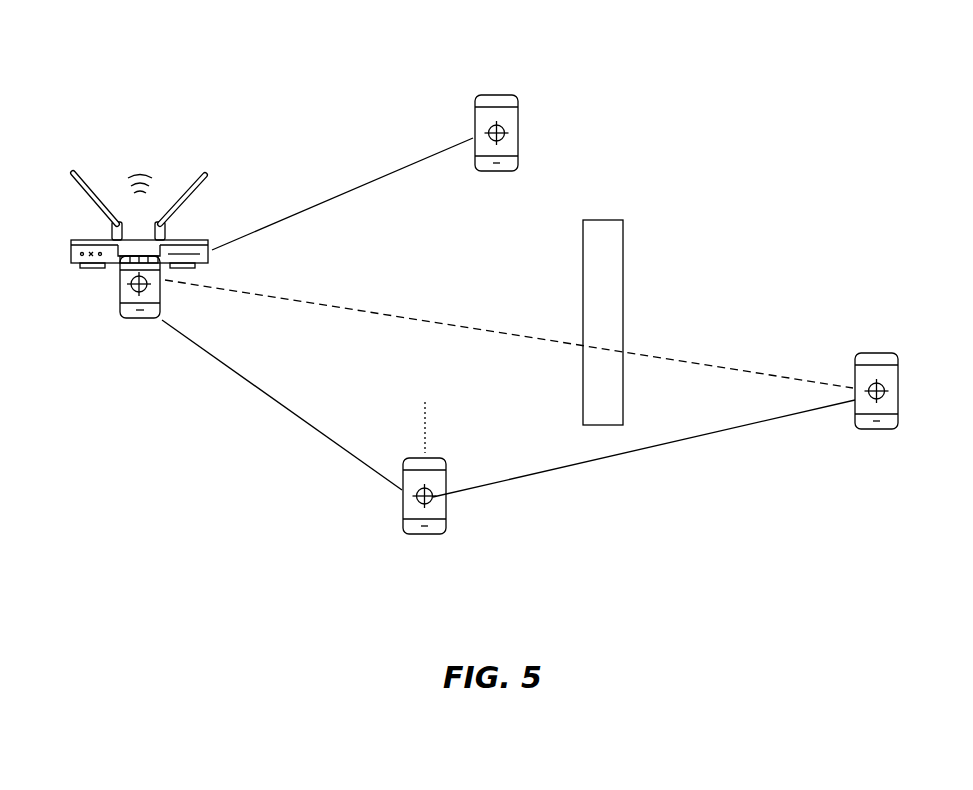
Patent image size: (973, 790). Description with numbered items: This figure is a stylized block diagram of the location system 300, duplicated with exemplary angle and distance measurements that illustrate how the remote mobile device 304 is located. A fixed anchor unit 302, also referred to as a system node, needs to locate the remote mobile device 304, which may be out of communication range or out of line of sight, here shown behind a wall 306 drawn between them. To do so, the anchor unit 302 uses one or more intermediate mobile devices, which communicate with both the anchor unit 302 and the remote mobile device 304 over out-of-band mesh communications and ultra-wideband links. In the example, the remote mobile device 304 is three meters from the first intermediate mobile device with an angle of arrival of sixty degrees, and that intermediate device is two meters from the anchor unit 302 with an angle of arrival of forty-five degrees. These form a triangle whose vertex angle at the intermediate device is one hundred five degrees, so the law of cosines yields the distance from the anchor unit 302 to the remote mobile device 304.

The location system 300 is at (822, 128).
The fixed anchor unit 302 is at (192, 233).
The remote mobile device 304 is at (880, 352).
The wall 306 is at (622, 238).